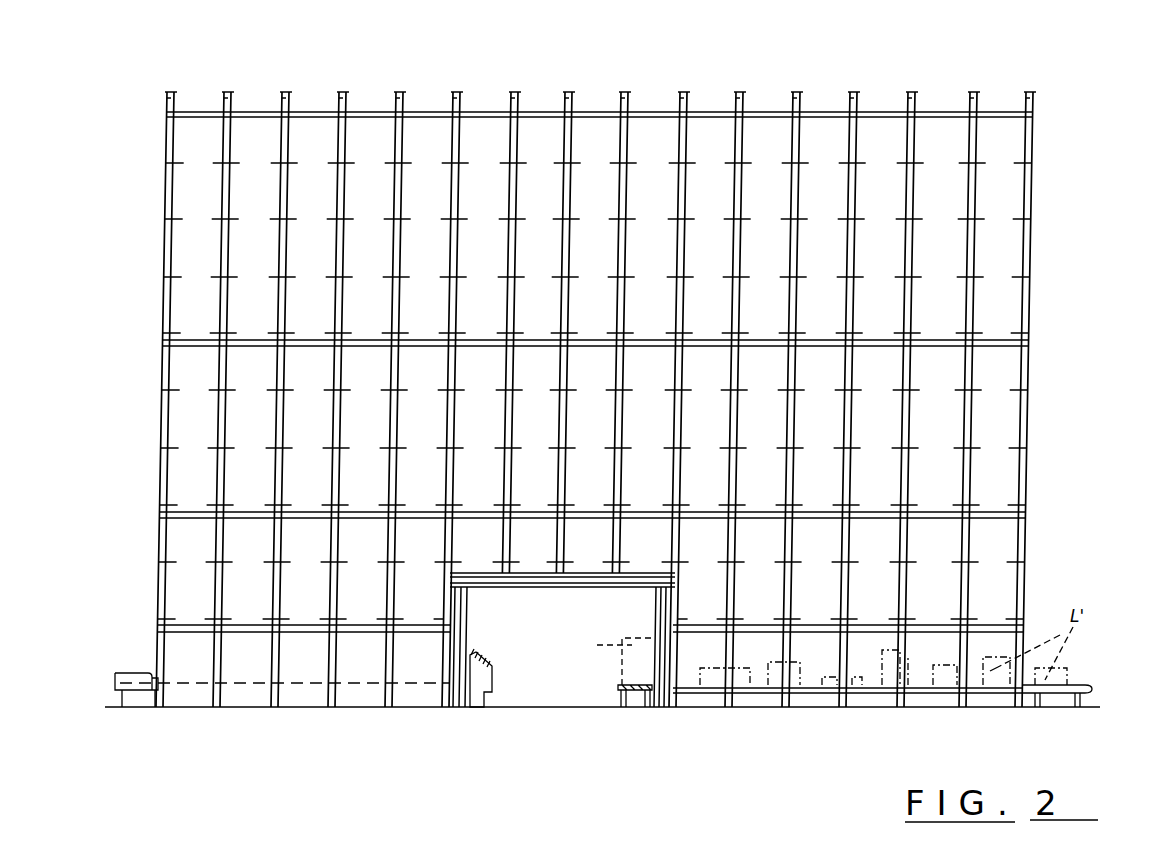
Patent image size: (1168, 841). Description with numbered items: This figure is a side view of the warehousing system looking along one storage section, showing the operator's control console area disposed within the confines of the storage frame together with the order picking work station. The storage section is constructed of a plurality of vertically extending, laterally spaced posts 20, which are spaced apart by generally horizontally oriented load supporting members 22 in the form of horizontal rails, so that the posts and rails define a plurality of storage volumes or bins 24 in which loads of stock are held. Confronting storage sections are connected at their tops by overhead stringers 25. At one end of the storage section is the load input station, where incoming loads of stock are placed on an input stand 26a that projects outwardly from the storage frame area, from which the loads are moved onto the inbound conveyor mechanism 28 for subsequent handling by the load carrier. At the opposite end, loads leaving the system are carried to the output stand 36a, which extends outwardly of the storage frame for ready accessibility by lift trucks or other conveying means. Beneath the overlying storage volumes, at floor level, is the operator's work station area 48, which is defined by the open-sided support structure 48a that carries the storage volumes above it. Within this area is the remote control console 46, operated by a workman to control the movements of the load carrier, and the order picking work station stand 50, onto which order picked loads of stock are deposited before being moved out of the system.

The post 20 is at (290, 103).
The load supporting member 22 is at (468, 163).
The storage volume 24 is at (190, 191).
The overhead stringer 25 is at (337, 128).
The input stand 26a is at (130, 674).
The inbound conveyor mechanism 28 is at (300, 683).
The output stand 36a is at (1088, 686).
The remote control console 46 is at (493, 681).
The operator's work station area 48 is at (553, 698).
The support structure 48a is at (470, 602).
The order picking work station stand 50 is at (641, 690).